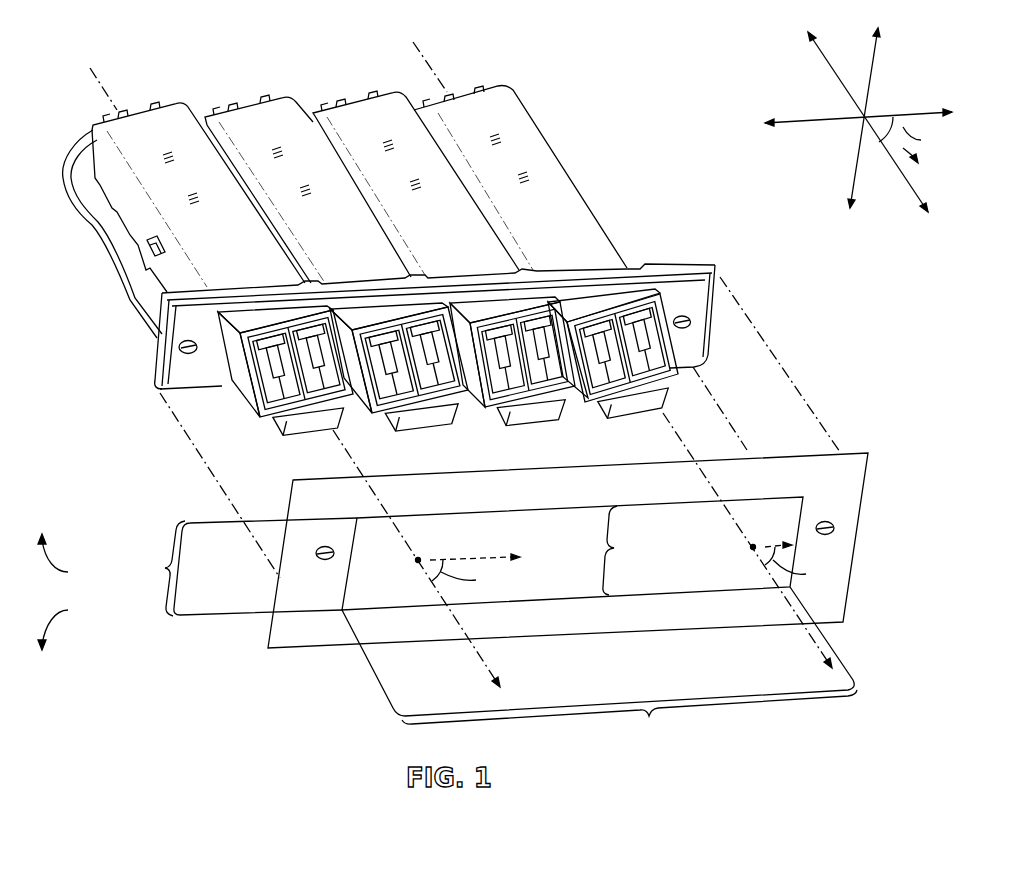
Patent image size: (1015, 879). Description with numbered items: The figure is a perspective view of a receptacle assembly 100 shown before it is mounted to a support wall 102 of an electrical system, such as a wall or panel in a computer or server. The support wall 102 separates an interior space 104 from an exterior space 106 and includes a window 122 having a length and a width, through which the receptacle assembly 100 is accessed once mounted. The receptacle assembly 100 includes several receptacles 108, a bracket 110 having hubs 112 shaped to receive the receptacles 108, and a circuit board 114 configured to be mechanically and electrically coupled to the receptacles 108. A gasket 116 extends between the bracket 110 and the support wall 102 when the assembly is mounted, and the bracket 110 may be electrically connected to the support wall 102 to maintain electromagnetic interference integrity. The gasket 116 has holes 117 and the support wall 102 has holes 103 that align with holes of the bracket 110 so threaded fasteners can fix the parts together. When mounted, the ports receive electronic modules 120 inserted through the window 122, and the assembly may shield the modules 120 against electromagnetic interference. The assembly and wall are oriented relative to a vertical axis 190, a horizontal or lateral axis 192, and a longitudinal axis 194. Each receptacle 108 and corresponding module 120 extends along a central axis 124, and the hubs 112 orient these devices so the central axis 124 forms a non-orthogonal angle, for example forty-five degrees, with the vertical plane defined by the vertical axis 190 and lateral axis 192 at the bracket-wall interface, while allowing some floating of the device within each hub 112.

The receptacle assembly 100 is at (642, 38).
The support wall 102 is at (868, 478).
The holes 103 is at (316, 555).
The interior space 104 is at (75, 559).
The exterior space 106 is at (75, 625).
The receptacles 108 is at (248, 118).
The bracket 110 is at (675, 268).
The hubs 112 is at (263, 318).
The circuit board 114 is at (78, 172).
The gasket 116 is at (173, 373).
The holes 117 is at (190, 353).
The electronic modules 120 is at (320, 393).
The window 122 is at (636, 550).
The central axis 124 is at (487, 655).
The vertical axis 190 is at (872, 80).
The horizontal or lateral axis 192 is at (917, 110).
The longitudinal axis 194 is at (900, 177).